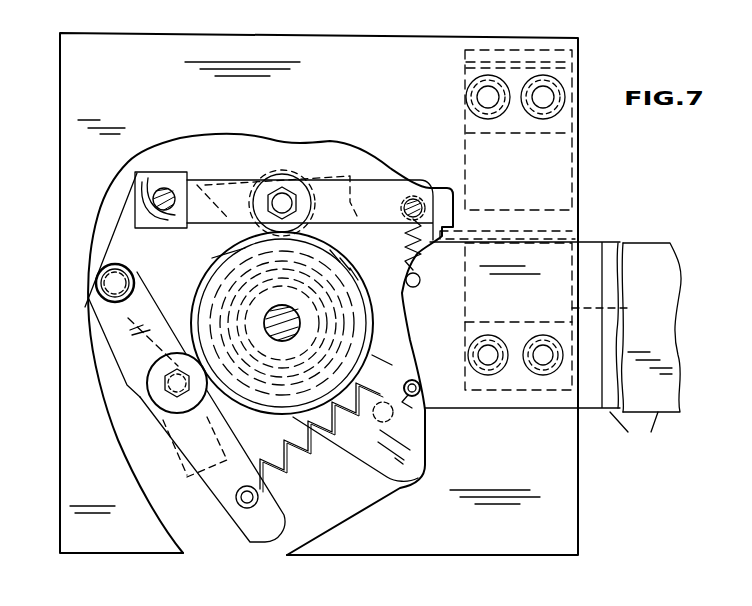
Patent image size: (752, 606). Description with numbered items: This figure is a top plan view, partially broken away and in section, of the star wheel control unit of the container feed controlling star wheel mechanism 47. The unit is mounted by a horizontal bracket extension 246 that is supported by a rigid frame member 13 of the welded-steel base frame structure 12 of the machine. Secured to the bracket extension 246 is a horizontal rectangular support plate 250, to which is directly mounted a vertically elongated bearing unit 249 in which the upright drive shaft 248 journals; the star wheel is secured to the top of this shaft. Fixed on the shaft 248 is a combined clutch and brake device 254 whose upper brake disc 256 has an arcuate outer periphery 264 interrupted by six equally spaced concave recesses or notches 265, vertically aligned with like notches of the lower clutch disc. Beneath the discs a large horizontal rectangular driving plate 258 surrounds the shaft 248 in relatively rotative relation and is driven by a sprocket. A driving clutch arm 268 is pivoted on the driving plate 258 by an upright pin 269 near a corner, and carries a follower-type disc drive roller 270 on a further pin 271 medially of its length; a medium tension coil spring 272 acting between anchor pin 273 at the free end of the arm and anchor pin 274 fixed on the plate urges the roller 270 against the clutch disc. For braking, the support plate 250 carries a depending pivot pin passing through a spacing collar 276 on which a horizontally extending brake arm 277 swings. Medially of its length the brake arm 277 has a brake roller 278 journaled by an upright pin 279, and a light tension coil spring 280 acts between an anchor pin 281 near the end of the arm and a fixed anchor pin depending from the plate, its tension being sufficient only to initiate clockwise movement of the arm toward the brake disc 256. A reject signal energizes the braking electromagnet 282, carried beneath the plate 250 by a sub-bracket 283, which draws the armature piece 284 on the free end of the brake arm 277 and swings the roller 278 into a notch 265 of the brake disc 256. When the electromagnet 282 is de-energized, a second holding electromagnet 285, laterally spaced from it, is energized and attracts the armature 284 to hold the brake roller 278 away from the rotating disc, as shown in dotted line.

The base frame structure 12 is at (685, 361).
The rigid frame members 13 is at (634, 429).
The star wheel mechanism 47 is at (598, 463).
The bracket extension 246 is at (595, 250).
The drive shaft 248 is at (300, 314).
The bearing unit 249 is at (322, 264).
The support plate 250 is at (300, 43).
The combined clutch and brake device 254 is at (347, 298).
The brake disc 256 is at (163, 240).
The driving plate 258 is at (393, 470).
The arcuate outer periphery 264 is at (192, 337).
The recesses or notches 265 is at (287, 435).
The driving clutch arm 268 is at (191, 470).
The pin 269 is at (106, 288).
The disc drive roller 270 is at (163, 394).
The pin 271 is at (171, 392).
The tension coil spring 272 is at (274, 478).
The anchor pin 273 is at (238, 500).
The anchor pin 274 is at (419, 381).
The spacing collar 276 is at (137, 183).
The brake arm 277 is at (367, 197).
The brake roller 278 is at (283, 176).
The pin 279 is at (306, 174).
The light tension coil spring 280 is at (432, 237).
The anchor pin 281 is at (422, 217).
The braking electromagnet 282 is at (620, 310).
The sub-bracket 283 is at (466, 397).
The armature piece 284 is at (478, 228).
The holding electromagnet 285 is at (574, 162).